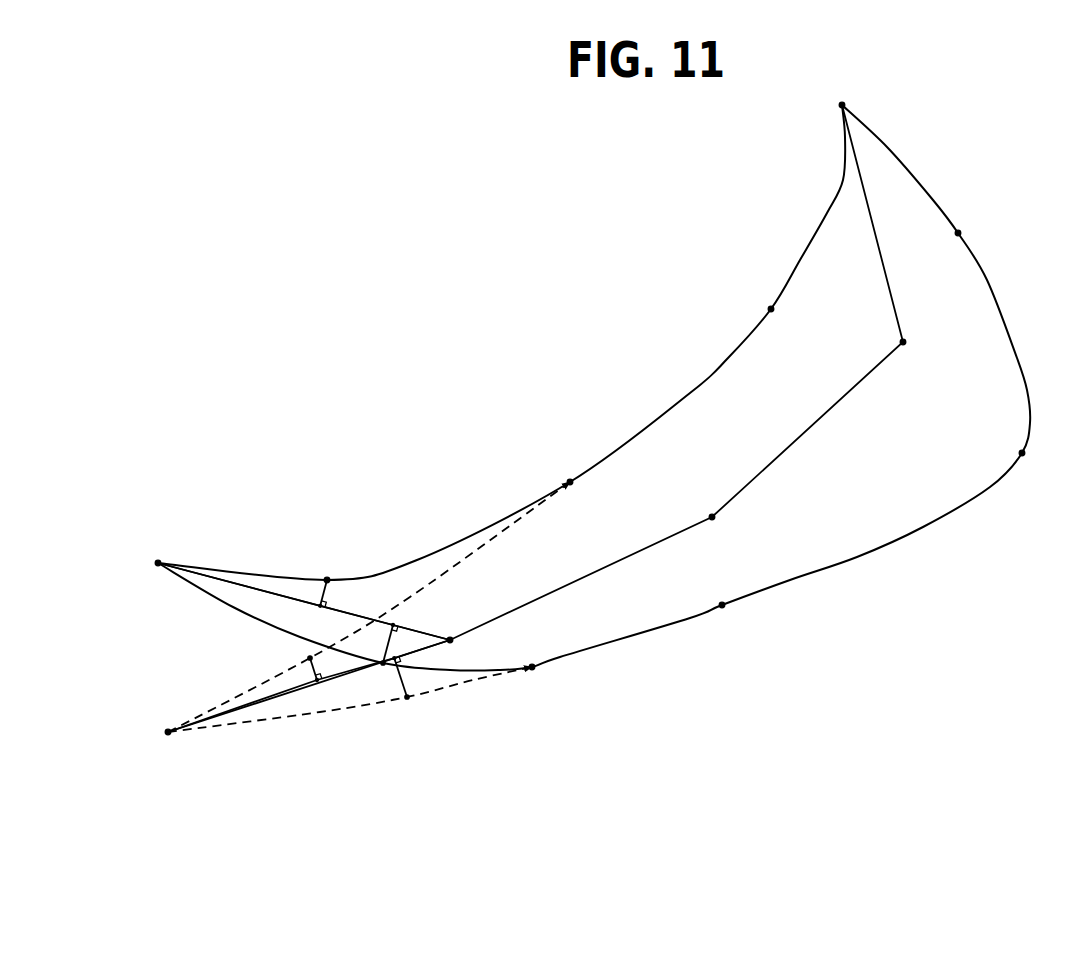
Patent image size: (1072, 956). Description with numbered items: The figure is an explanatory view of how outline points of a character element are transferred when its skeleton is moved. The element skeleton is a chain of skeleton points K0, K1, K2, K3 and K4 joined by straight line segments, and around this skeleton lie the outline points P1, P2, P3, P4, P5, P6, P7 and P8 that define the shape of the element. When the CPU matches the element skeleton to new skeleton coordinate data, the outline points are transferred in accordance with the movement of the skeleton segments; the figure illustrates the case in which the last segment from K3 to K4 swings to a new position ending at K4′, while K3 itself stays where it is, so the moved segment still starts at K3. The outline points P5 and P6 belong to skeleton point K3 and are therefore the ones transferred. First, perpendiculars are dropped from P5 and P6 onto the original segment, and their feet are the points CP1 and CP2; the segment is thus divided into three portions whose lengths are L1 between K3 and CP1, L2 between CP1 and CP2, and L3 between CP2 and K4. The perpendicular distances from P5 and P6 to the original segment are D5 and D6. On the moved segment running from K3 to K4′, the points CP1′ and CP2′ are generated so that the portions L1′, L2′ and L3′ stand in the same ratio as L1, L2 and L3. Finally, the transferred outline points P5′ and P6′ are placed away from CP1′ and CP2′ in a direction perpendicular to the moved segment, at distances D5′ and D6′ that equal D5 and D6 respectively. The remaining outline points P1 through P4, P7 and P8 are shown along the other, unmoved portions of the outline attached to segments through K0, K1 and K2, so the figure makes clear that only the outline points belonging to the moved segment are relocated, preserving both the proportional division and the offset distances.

The skeleton point K0 is at (859, 94).
The skeleton point K1 is at (925, 342).
The skeleton point K2 is at (734, 527).
The skeleton point K3 is at (507, 645).
The skeleton point K4 is at (141, 745).
The moved skeleton point K4′ is at (133, 551).
The outline point P1 is at (976, 227).
The outline point P2 is at (1041, 468).
The outline point P3 is at (732, 627).
The outline point P4 is at (545, 685).
The outline point P5 is at (412, 717).
The transferred outline point P5′ is at (371, 682).
The outline point P6 is at (288, 656).
The transferred outline point P6′ is at (325, 564).
The outline point P7 is at (568, 466).
The outline point P8 is at (751, 294).
The distance D5 is at (410, 683).
The distance D5′ is at (383, 642).
The distance D6 is at (307, 675).
The distance D6′ is at (313, 590).
The foot of perpendicular CP1 is at (399, 652).
The proportional point CP1′ is at (392, 617).
The foot of perpendicular CP2 is at (315, 685).
The proportional point CP2′ is at (310, 607).
The length of line segment K3-CP1 L1 is at (422, 653).
The length of line segment CP1-CP2 L2 is at (355, 668).
The length of line segment CP2-K4 L3 is at (242, 706).
The length of line segment K3'-CP1' L1′ is at (421, 627).
The length of line segment CP1'-CP2' L2′ is at (356, 609).
The length of line segment CP2'-K4' L3′ is at (239, 587).